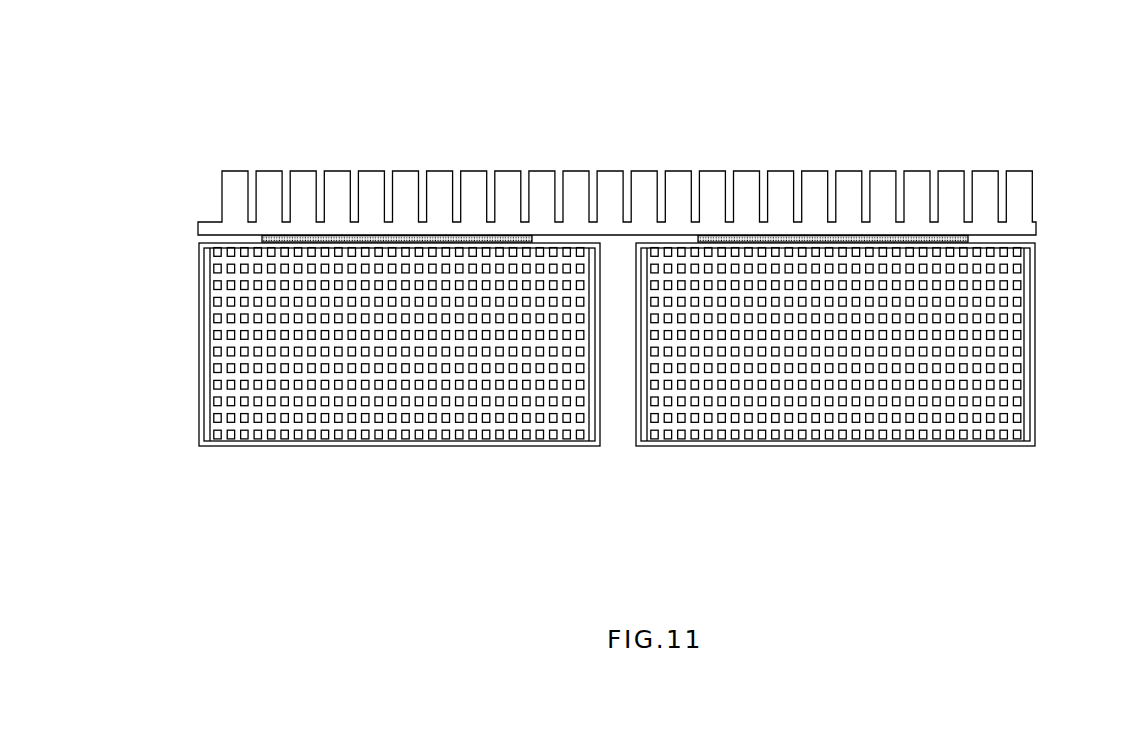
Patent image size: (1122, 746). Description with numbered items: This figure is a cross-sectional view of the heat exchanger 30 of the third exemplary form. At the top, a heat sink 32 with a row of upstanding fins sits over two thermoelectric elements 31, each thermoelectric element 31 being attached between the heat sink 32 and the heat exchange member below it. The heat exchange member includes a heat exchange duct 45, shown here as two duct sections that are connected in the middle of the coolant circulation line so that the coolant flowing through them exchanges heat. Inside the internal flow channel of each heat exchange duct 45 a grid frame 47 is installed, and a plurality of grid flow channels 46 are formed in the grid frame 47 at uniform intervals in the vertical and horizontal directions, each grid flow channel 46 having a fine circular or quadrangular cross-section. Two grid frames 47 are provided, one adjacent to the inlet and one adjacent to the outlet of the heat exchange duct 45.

The heat exchanger 30 is at (183, 78).
The thermoelectric element 31 is at (304, 240).
The heat sink 32 is at (1024, 196).
The heat exchange duct 45 is at (199, 341).
The grid flow channels 46 is at (332, 435).
The grid frame 47 is at (196, 386).